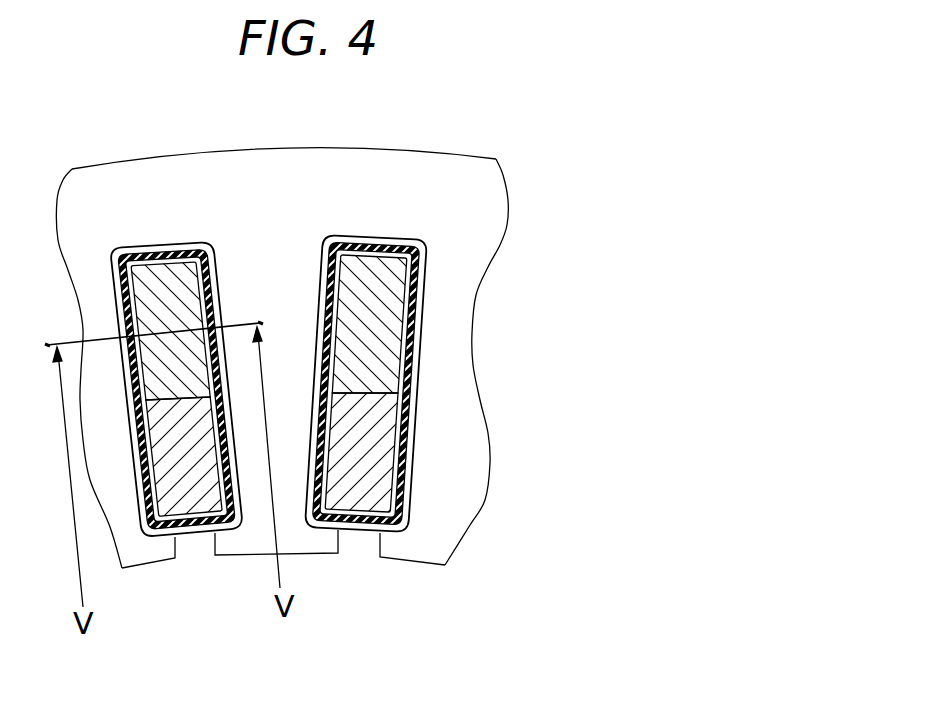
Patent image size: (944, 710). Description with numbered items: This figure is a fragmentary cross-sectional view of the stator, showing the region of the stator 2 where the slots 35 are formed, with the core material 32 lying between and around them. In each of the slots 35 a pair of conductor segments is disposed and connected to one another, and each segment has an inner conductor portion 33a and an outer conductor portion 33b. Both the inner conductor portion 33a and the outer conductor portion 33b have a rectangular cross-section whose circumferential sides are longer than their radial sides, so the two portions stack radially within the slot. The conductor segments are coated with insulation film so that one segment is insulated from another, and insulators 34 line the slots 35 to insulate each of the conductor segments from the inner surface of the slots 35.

The stator core 2 is at (323, 335).
The slot 32 is at (297, 170).
The inner conductor portion 33a is at (381, 467).
The outer conductor portion 33b is at (385, 273).
The insulator 34 is at (417, 317).
The slot 35 is at (155, 245).